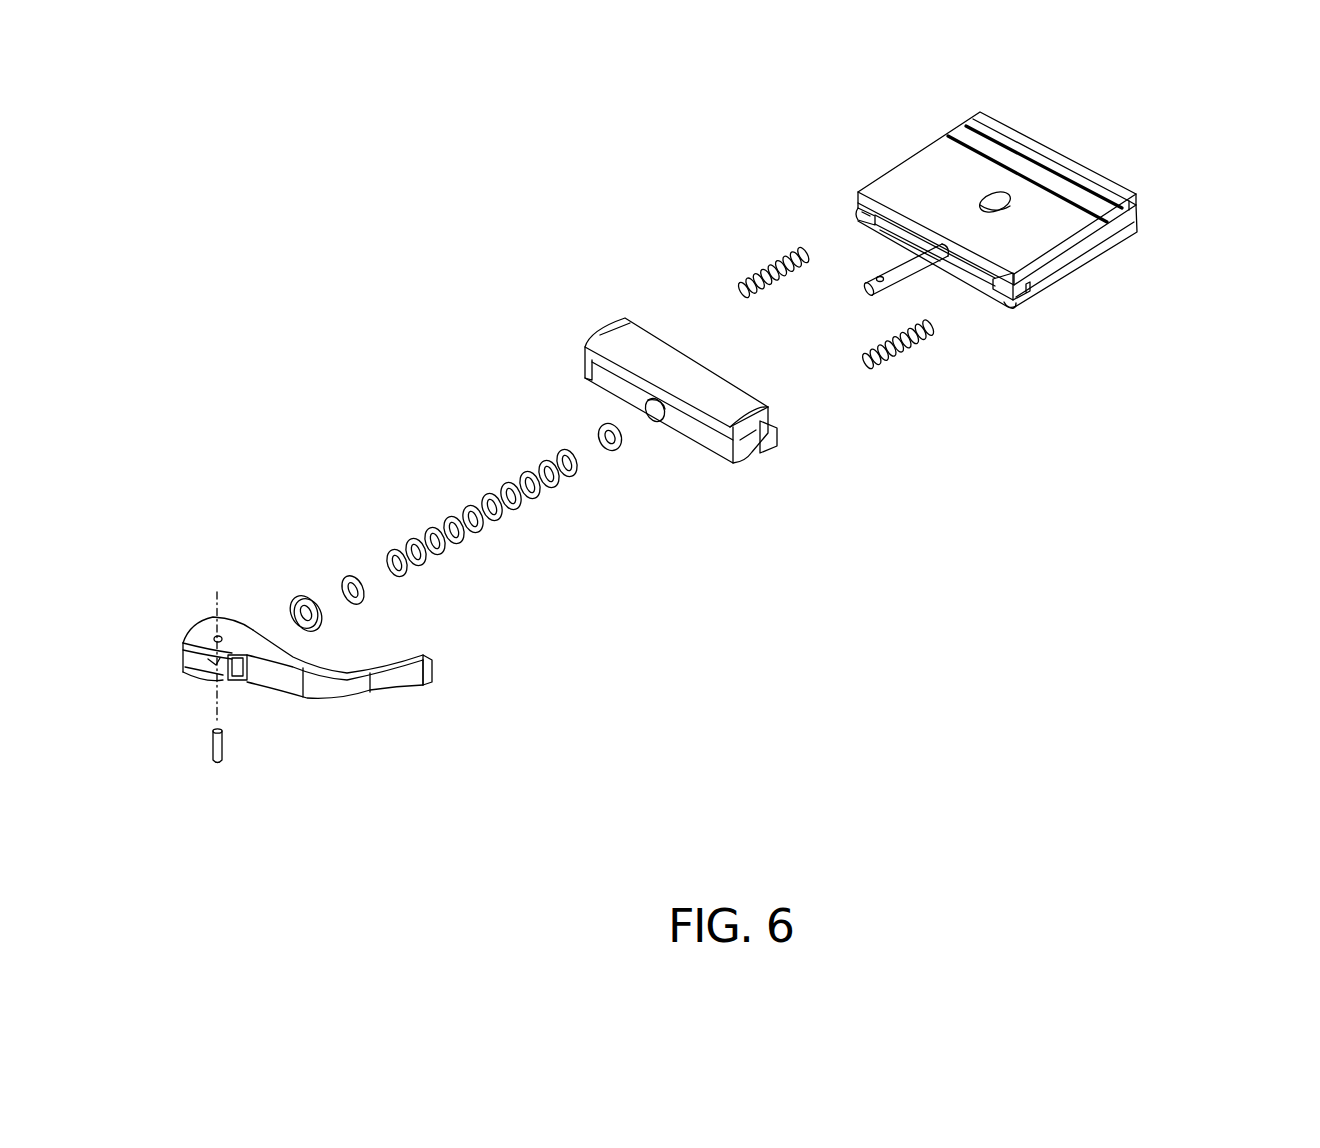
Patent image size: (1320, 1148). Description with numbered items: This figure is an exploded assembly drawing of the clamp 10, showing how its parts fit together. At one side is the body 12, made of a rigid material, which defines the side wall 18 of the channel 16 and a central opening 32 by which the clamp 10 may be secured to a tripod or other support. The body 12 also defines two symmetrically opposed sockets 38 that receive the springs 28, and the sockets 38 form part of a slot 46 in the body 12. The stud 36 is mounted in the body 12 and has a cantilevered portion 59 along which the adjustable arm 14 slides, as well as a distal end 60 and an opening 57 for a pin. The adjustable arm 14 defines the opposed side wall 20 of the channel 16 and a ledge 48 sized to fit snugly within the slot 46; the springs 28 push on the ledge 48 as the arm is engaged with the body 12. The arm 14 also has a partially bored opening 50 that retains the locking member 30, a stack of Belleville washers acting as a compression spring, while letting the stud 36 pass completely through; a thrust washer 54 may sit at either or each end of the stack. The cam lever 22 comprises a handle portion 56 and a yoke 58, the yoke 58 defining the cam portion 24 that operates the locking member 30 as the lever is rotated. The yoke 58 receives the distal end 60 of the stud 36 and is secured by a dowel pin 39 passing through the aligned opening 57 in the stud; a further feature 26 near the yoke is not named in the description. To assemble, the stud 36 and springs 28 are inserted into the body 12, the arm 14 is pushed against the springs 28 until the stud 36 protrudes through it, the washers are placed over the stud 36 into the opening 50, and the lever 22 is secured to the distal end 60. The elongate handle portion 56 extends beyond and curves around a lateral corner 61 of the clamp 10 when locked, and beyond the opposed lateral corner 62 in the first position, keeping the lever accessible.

The clamp 10 is at (806, 691).
The body 12 is at (888, 152).
The adjustable arm 14 is at (640, 336).
The channel 16 is at (1117, 264).
The side wall 18 is at (1132, 226).
The side wall 20 is at (773, 406).
The cam lever 22 is at (197, 690).
The cam portion 24 is at (207, 625).
The pin hole 26 is at (216, 633).
The springs 28 is at (852, 352).
The locking member 30 is at (463, 499).
The central opening 32 is at (1000, 200).
The stud 36 is at (898, 264).
The sockets 38 is at (862, 222).
The dowel pin 39 is at (226, 742).
The slot 46 is at (970, 278).
The ledge 48 is at (765, 446).
The partially bored opening 50 is at (658, 420).
The thrust washer 54 is at (602, 428).
The handle portion 56 is at (340, 698).
The opening 57 is at (877, 278).
The yoke 58 is at (188, 632).
The cantilevered portion 59 is at (240, 620).
The distal end 60 is at (880, 297).
The lateral corner 61 is at (1018, 306).
The opposed lateral corner 62 is at (858, 196).